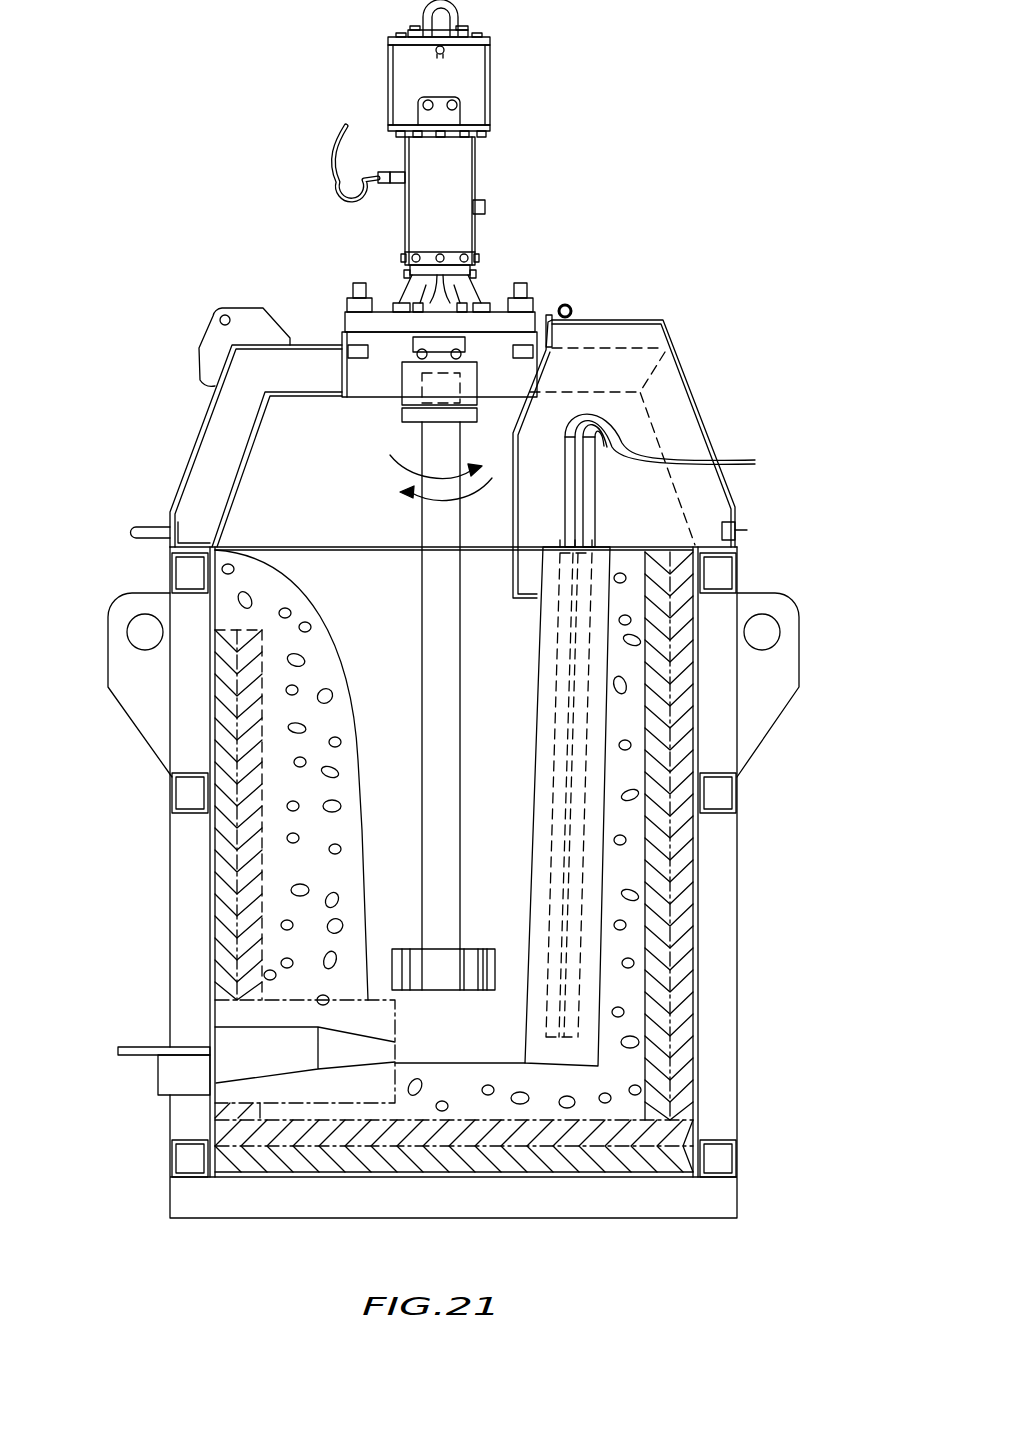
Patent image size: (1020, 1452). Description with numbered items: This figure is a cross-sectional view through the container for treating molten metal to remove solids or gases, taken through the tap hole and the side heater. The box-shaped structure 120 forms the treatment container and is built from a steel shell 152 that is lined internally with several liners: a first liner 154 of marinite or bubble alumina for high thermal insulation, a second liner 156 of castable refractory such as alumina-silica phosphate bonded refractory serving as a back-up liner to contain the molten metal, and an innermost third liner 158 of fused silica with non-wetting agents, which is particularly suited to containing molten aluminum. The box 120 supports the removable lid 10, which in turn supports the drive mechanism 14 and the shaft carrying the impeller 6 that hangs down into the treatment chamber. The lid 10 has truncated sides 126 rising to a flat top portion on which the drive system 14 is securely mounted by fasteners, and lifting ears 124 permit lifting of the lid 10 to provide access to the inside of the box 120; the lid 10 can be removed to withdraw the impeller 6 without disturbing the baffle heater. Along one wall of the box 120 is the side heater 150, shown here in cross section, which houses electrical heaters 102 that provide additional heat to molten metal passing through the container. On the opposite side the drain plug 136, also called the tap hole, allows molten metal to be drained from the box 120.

The impeller 6 is at (472, 985).
The removable lid 10 is at (615, 320).
The drive mechanism 14 is at (482, 70).
The heaters 102 is at (590, 470).
The box-shaped structure 120 is at (326, 142).
The lifting ears 124 is at (231, 312).
The truncated sides 126 is at (696, 397).
The drain plug 136 is at (235, 1058).
The side heater 150 is at (535, 736).
The steel shell 152 is at (172, 895).
The first liner 154 is at (678, 910).
The second liner 156 is at (665, 960).
The third liner 158 is at (335, 830).